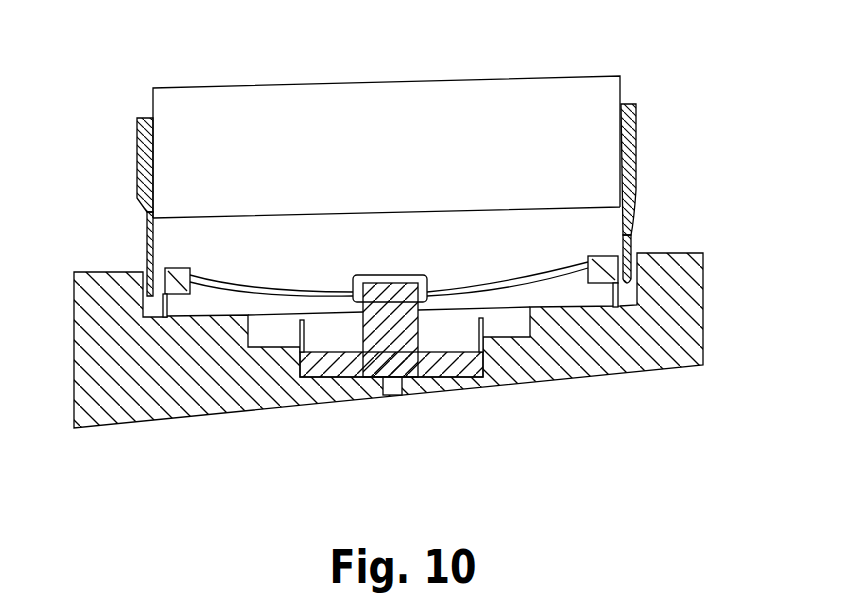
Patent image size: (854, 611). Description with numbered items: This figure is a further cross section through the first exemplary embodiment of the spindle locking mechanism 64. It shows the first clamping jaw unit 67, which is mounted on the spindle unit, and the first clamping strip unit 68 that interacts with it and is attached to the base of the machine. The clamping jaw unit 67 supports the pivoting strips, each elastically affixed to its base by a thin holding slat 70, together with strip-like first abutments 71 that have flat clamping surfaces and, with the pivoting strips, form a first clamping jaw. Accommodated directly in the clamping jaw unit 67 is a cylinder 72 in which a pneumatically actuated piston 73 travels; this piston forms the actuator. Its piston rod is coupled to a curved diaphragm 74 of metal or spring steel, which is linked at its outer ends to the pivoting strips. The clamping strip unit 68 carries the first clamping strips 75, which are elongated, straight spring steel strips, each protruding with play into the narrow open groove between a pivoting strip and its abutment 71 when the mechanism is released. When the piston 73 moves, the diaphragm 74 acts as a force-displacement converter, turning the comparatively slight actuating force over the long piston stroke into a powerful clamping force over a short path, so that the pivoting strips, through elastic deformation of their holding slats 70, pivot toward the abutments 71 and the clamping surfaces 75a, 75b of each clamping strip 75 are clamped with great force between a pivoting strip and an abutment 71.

The spindle locking mechanism 64 is at (398, 264).
The first clamping jaw unit 67 is at (670, 342).
The first clamping strip unit 68 is at (597, 130).
The holding slat 70 is at (143, 315).
The first abutment 71 is at (138, 271).
The cylinder 72 is at (470, 360).
The piston 73 is at (425, 365).
The diaphragm 74 is at (480, 290).
The first clamping strip 75 is at (396, 175).
The first clamping surface 75a is at (145, 283).
The first clamping surface 75b is at (167, 252).